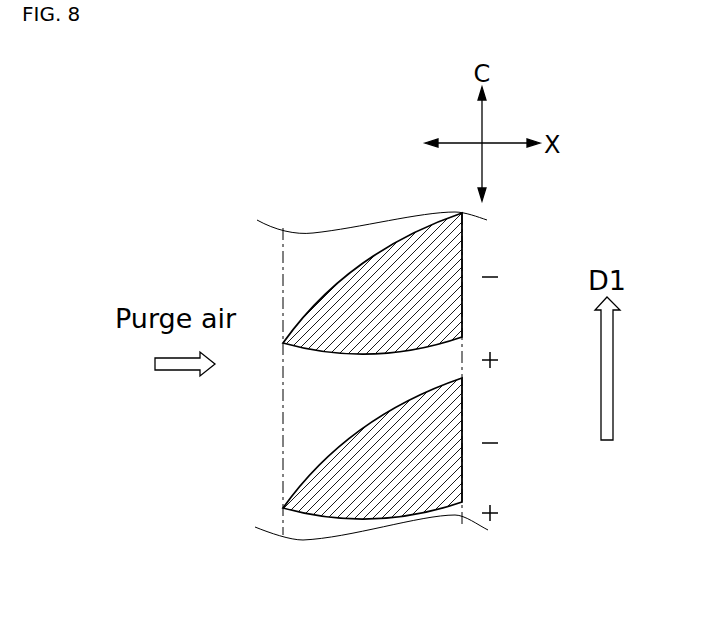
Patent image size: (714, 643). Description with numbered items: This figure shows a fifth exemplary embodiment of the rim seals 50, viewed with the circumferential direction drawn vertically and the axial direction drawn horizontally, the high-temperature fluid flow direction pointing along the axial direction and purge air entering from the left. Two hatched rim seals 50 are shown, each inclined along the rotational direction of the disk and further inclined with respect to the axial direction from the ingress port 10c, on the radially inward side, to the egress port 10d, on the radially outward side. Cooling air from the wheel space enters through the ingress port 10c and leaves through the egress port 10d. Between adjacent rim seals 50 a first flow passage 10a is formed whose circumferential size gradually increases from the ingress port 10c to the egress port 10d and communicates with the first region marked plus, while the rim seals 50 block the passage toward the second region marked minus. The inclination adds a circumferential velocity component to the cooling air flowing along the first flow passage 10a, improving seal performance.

The rim seal 50 is at (346, 264).
The first flow passage 10a is at (363, 387).
The ingress port 10c is at (283, 395).
The egress port 10d is at (463, 367).